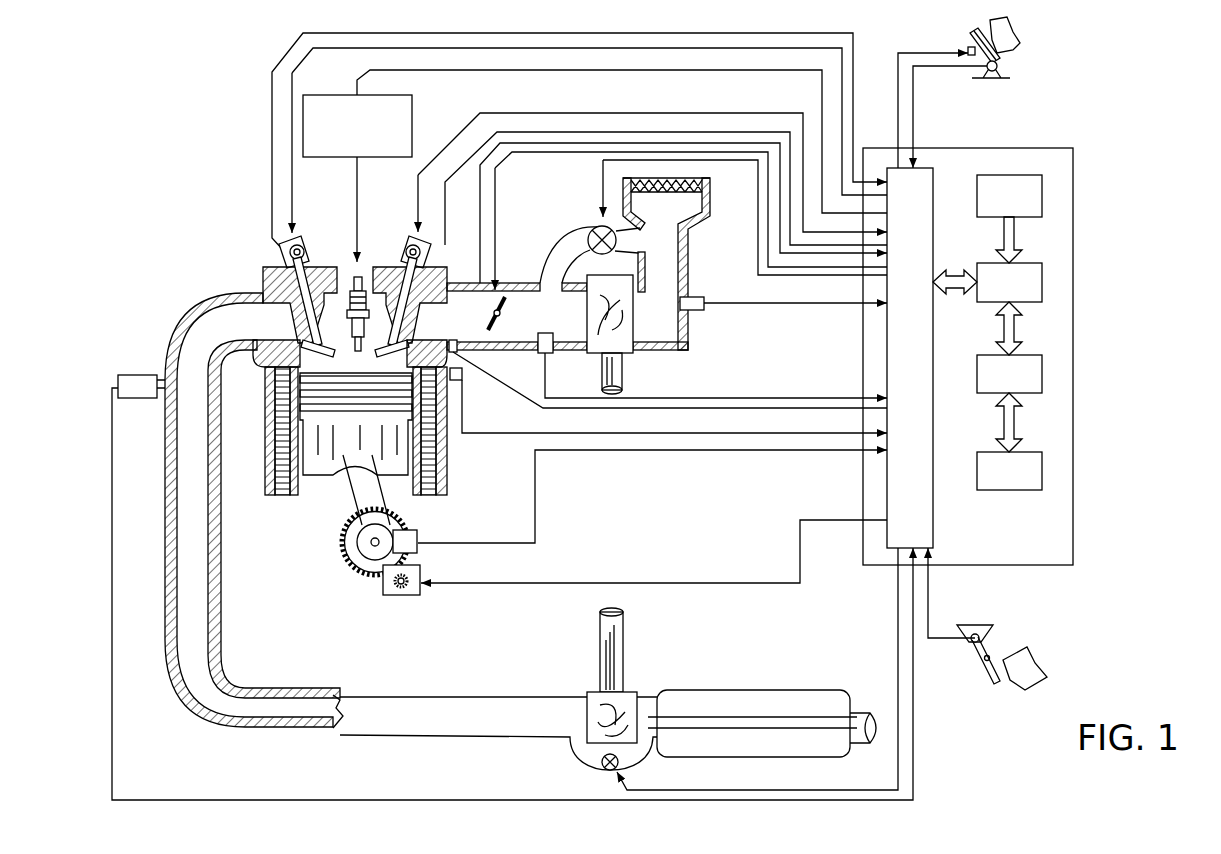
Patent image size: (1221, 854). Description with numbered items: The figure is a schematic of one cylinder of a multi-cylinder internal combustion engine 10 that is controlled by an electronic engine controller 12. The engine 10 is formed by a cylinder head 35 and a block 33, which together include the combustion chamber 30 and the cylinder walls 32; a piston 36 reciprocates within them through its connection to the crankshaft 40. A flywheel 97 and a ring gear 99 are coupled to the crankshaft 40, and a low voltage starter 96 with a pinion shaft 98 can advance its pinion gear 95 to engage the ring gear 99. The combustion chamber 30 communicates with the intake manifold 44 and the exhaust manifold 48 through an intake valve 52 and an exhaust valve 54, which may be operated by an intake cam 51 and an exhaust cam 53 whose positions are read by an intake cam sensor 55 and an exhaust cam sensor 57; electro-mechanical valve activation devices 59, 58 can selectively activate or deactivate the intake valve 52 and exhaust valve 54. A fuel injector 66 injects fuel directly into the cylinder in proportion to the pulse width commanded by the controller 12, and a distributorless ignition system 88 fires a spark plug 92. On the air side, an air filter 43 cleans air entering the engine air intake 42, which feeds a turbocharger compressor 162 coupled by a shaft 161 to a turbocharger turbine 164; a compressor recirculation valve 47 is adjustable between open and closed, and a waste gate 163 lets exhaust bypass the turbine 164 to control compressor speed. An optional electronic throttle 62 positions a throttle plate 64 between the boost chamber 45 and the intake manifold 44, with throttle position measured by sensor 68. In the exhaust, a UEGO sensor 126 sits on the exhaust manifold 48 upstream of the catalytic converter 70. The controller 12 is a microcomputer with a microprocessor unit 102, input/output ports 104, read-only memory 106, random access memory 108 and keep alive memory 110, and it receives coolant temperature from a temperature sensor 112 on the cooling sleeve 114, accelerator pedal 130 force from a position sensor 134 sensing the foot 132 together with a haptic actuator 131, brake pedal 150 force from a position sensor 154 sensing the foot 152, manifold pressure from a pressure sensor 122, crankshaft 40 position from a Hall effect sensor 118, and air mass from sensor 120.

The internal combustion engine 10 is at (207, 228).
The electronic engine controller 12 is at (1065, 150).
The combustion chamber 30 is at (355, 365).
The cylinder walls 32 is at (300, 490).
The block 33 is at (262, 396).
The cylinder head 35 is at (260, 266).
The piston 36 is at (338, 462).
The crankshaft 40 is at (357, 568).
The engine air intake 42 is at (548, 200).
The air filter 43 is at (685, 193).
The intake manifold 44 is at (450, 328).
The boost chamber 45 is at (541, 328).
The compressor recirculation valve 47 is at (592, 230).
The exhaust manifold 48 is at (223, 332).
The intake cam 51 is at (405, 240).
The intake valve 52 is at (397, 338).
The exhaust cam 53 is at (302, 240).
The exhaust valve 54 is at (270, 303).
The intake cam sensor 55 is at (422, 255).
The exhaust cam sensor 57 is at (282, 248).
The valve activation device 58 is at (307, 252).
The valve activation device 59 is at (408, 256).
The electronic throttle 62 is at (500, 308).
The throttle plate 64 is at (494, 328).
The fuel injector 66 is at (458, 352).
The throttle position sensor 68 is at (487, 289).
The catalytic converter 70 is at (690, 690).
The distributorless ignition system 88 is at (320, 95).
The spark plug 92 is at (362, 277).
The pinion gear 95 is at (405, 596).
The starter 96 is at (420, 593).
The flywheel 97 is at (345, 540).
The pinion shaft 98 is at (392, 585).
The ring gear 99 is at (358, 580).
The microprocessor unit 102 is at (1042, 282).
The input/output ports 104 is at (933, 175).
The read-only memory 106 is at (1042, 195).
The random access memory 108 is at (1042, 375).
The keep alive memory 110 is at (1042, 472).
The temperature sensor 112 is at (668, 400).
The cooling sleeve 114 is at (447, 455).
The Hall effect sensor 118 is at (418, 532).
The air mass sensor 120 is at (703, 297).
The pressure sensor 122 is at (538, 350).
The Universal Exhaust Gas Oxygen sensor 126 is at (118, 378).
The accelerator pedal 130 is at (970, 42).
The haptic actuator 131 is at (966, 50).
The foot 132 is at (1017, 30).
The position sensor 134 is at (1003, 66).
The brake pedal 150 is at (990, 672).
The foot 152 is at (1023, 650).
The position sensor 154 is at (960, 625).
The shaft 161 is at (603, 367).
The turbocharger compressor 162 is at (620, 350).
The waste gate 163 is at (608, 768).
The turbocharger turbine 164 is at (592, 692).